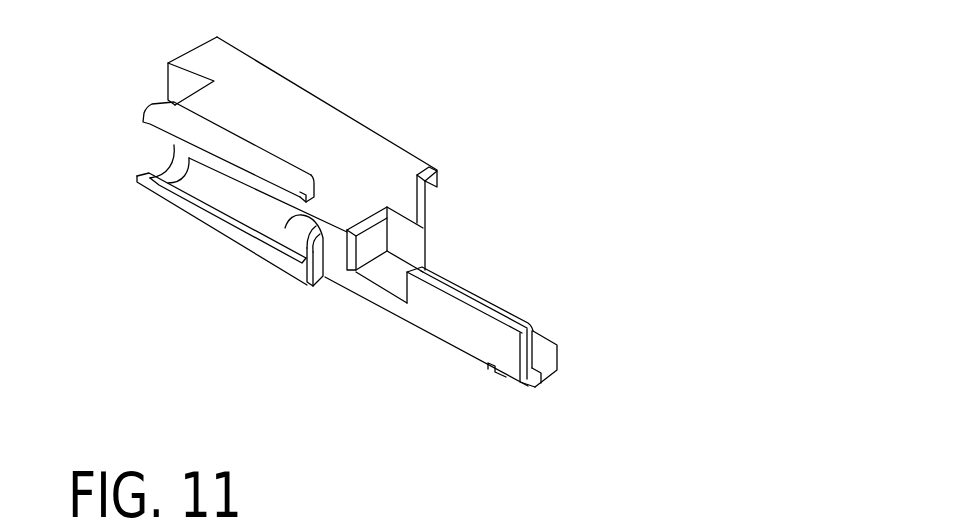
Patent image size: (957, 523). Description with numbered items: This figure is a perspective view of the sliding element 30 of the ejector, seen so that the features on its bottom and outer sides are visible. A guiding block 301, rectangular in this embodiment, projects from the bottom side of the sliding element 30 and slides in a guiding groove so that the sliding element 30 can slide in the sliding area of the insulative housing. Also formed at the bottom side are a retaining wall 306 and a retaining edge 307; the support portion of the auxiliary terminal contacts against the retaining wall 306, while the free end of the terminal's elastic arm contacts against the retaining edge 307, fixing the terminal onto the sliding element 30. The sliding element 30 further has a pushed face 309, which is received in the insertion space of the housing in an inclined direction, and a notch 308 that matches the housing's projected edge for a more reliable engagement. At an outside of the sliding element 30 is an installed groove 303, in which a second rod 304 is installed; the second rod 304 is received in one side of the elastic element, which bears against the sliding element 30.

The sliding element 30 is at (633, 33).
The guiding block 301 is at (237, 141).
The installed groove 303 is at (163, 162).
The second rod 304 is at (300, 231).
The retaining wall 306 is at (455, 323).
The retaining edge 307 is at (407, 203).
The notch 308 is at (508, 382).
The pushed face 309 is at (425, 218).